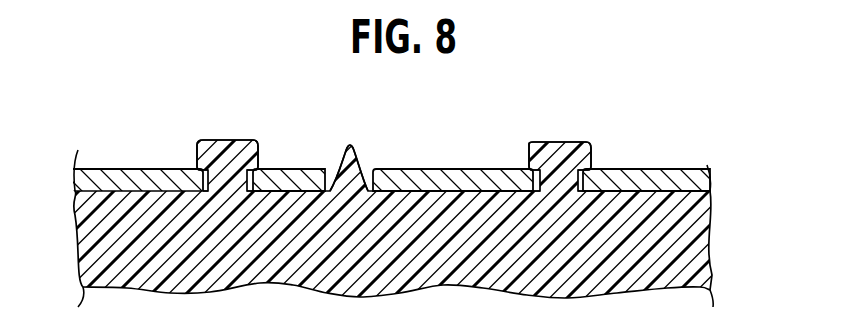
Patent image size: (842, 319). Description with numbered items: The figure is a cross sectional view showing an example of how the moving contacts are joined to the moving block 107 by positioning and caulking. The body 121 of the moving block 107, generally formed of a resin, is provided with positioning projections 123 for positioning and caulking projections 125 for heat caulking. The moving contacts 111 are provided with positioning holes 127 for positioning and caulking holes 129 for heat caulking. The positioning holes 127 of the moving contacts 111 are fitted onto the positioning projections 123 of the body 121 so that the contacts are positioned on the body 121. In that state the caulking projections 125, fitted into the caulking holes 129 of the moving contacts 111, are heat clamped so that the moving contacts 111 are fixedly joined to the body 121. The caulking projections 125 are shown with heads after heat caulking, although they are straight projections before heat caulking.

The moving block 107 is at (421, 176).
The moving contacts 111 is at (677, 168).
The body 121 is at (700, 270).
The positioning projections 123 is at (349, 142).
The caulking projections 125 is at (220, 139).
The positioning holes 127 is at (383, 168).
The caulking holes 129 is at (262, 168).